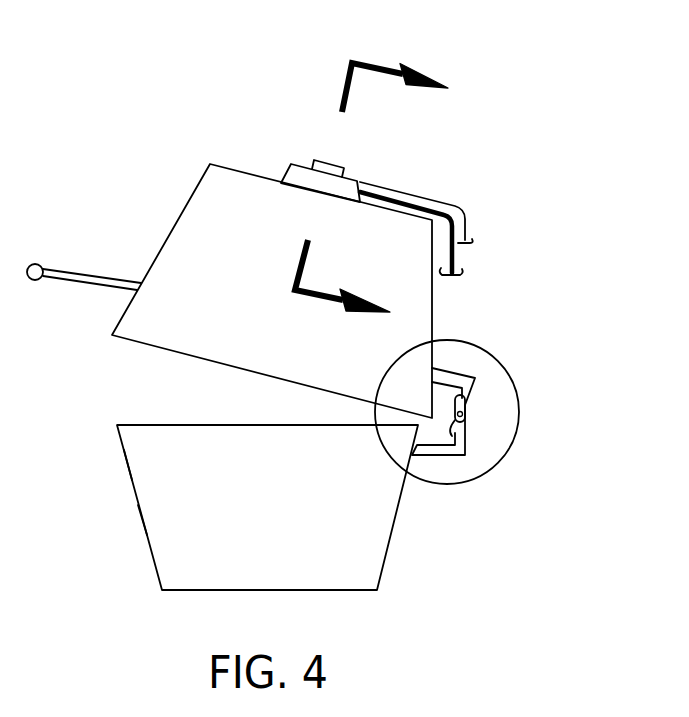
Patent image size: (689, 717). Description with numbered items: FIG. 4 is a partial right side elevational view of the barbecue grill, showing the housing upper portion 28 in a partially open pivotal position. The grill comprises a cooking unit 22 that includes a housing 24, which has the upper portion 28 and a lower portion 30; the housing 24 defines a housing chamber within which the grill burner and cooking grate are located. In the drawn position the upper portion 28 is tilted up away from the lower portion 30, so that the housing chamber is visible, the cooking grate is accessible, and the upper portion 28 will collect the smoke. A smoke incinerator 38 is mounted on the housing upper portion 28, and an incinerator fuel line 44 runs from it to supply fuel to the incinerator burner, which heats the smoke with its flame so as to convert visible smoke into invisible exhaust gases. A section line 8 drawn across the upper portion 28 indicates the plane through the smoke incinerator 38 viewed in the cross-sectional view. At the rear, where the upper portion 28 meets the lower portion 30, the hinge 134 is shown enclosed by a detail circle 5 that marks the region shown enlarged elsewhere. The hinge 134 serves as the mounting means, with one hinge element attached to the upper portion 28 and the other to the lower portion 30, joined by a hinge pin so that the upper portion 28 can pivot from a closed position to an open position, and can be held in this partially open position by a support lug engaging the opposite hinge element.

The section line 8 is at (371, 188).
The housing upper portion 28 is at (180, 215).
The smoke incinerator 38 is at (287, 162).
The incinerator fuel line 44 is at (453, 267).
The detail circle 5 is at (512, 375).
The hinge 134 is at (463, 433).
The cooking unit 22 is at (395, 520).
The housing lower portion 30 is at (128, 475).
The housing 24 is at (142, 518).